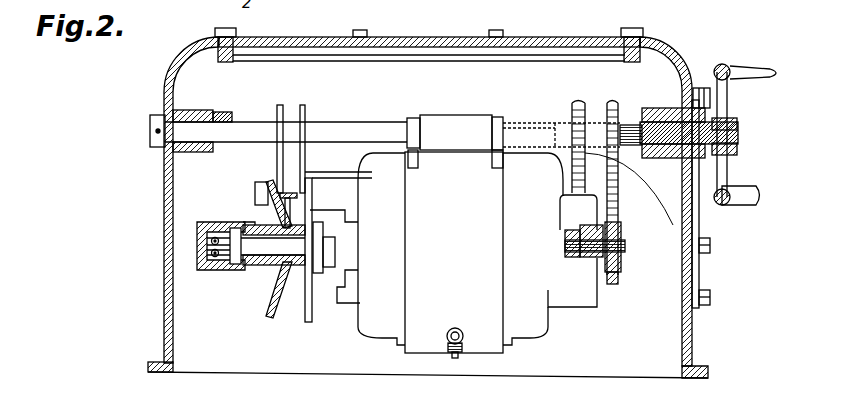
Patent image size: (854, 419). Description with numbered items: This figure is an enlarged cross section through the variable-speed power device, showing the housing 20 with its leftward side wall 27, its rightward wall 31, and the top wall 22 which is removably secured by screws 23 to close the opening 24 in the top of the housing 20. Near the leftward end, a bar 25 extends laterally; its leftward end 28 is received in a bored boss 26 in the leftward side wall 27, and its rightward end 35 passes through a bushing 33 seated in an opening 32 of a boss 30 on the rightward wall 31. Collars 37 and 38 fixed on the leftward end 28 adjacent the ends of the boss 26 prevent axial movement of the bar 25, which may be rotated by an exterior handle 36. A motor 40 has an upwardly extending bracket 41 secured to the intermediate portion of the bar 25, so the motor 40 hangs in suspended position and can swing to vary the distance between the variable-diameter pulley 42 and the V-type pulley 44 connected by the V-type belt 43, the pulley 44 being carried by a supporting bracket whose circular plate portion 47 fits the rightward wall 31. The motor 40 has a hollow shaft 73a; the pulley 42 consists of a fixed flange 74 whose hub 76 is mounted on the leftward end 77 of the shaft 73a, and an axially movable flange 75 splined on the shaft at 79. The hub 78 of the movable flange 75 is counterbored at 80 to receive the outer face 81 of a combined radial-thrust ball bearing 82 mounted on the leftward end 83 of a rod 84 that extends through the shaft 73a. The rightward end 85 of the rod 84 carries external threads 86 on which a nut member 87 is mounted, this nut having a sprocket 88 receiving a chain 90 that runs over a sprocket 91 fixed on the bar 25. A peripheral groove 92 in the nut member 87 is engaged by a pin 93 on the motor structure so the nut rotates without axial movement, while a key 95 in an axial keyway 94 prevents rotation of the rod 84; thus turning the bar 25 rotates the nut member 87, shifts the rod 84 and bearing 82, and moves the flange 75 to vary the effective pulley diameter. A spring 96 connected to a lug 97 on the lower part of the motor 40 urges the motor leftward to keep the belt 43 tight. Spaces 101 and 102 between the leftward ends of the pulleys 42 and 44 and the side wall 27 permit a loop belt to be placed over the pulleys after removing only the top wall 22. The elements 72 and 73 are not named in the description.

The housing 20 is at (691, 326).
The top wall 22 is at (322, 42).
The screws 23 is at (496, 31).
The opening 24 is at (424, 53).
The bar 25 is at (385, 130).
The bored boss 26 is at (196, 110).
The leftward side wall 27 is at (166, 312).
The leftward end 28 is at (186, 132).
The boss 30 is at (672, 112).
The rightward wall 31 is at (691, 233).
The opening 32 is at (703, 147).
The bushing 33 is at (729, 158).
The rightward end 35 is at (739, 130).
The handle 36 is at (727, 65).
The collar 37 is at (149, 125).
The collar 38 is at (224, 118).
The motor 40 is at (383, 327).
The bracket 41 is at (475, 126).
The variable-diameter pulley 42 is at (287, 306).
The V-type belt 43 is at (283, 115).
The V-type pulley 44 is at (304, 118).
The circular plate portion 47 is at (702, 270).
The chain 72 is at (576, 163).
The chain 73 is at (579, 108).
The hollow shaft 73a is at (274, 296).
The fixed flange 74 is at (310, 190).
The axially movable flange 75 is at (270, 190).
The hub 76 is at (320, 230).
The leftward end 77 is at (336, 251).
The hub 78 is at (266, 264).
The spline 79 is at (255, 222).
The counterbore 80 is at (210, 232).
The outer face 81 is at (214, 269).
The ball bearing 82 is at (206, 256).
The leftward end 83 is at (234, 262).
The rod 84 is at (212, 245).
The rightward end 85 is at (620, 256).
The external threads 86 is at (613, 286).
The nut member 87 is at (604, 240).
The sprocket 88 is at (612, 215).
The chain 90 is at (620, 276).
The sprocket 91 is at (614, 106).
The peripheral groove 92 is at (590, 228).
The pin 93 is at (586, 288).
The axial keyway 94 is at (567, 241).
The key 95 is at (582, 259).
The spring 96 is at (472, 322).
The lug 97 is at (455, 359).
The space 101 is at (187, 270).
The space 102 is at (230, 190).